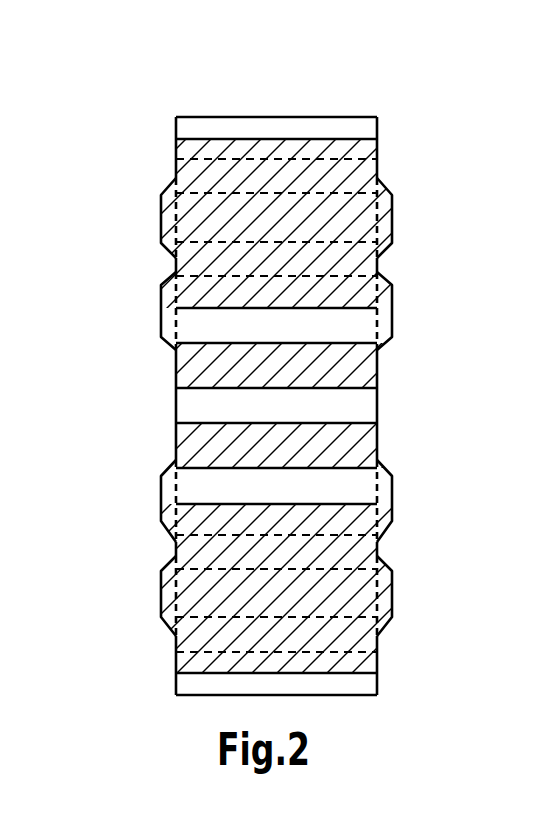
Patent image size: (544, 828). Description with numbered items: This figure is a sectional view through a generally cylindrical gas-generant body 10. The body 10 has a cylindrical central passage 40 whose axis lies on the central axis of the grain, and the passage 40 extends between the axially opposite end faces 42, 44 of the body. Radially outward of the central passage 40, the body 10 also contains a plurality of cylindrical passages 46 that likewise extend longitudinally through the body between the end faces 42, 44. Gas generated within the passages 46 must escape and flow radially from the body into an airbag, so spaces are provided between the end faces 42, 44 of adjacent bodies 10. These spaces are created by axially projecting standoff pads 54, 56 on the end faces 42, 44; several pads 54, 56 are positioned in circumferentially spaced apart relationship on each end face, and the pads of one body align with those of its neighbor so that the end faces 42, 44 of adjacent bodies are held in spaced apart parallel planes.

The body 10 is at (449, 123).
The cylindrical central passage 40 is at (362, 406).
The end face 42 is at (176, 152).
The end face 44 is at (378, 148).
The cylindrical passages 46 is at (253, 165).
The standoff pad 54 is at (168, 217).
The standoff pad 56 is at (389, 306).